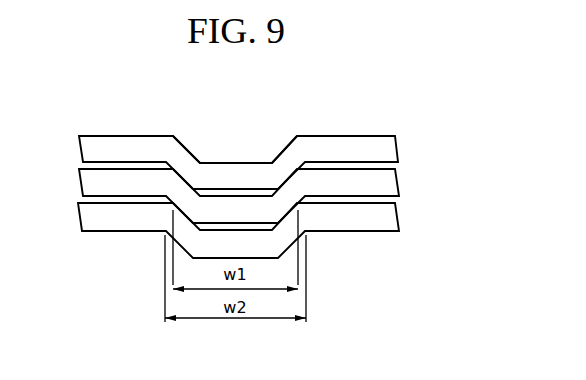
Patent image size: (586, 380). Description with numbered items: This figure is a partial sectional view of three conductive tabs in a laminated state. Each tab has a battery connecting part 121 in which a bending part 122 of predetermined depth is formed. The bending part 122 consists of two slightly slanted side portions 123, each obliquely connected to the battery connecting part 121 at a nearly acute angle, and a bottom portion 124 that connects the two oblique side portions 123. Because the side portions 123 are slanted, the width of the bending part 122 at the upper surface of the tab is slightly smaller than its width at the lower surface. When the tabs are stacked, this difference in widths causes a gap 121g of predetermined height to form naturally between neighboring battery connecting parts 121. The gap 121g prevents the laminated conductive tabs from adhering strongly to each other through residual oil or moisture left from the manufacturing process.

The battery connecting part 121 is at (367, 143).
The gap 121g is at (390, 165).
The bending part 122 is at (253, 153).
The side portion 123 is at (187, 147).
The bottom portion 124 is at (222, 162).